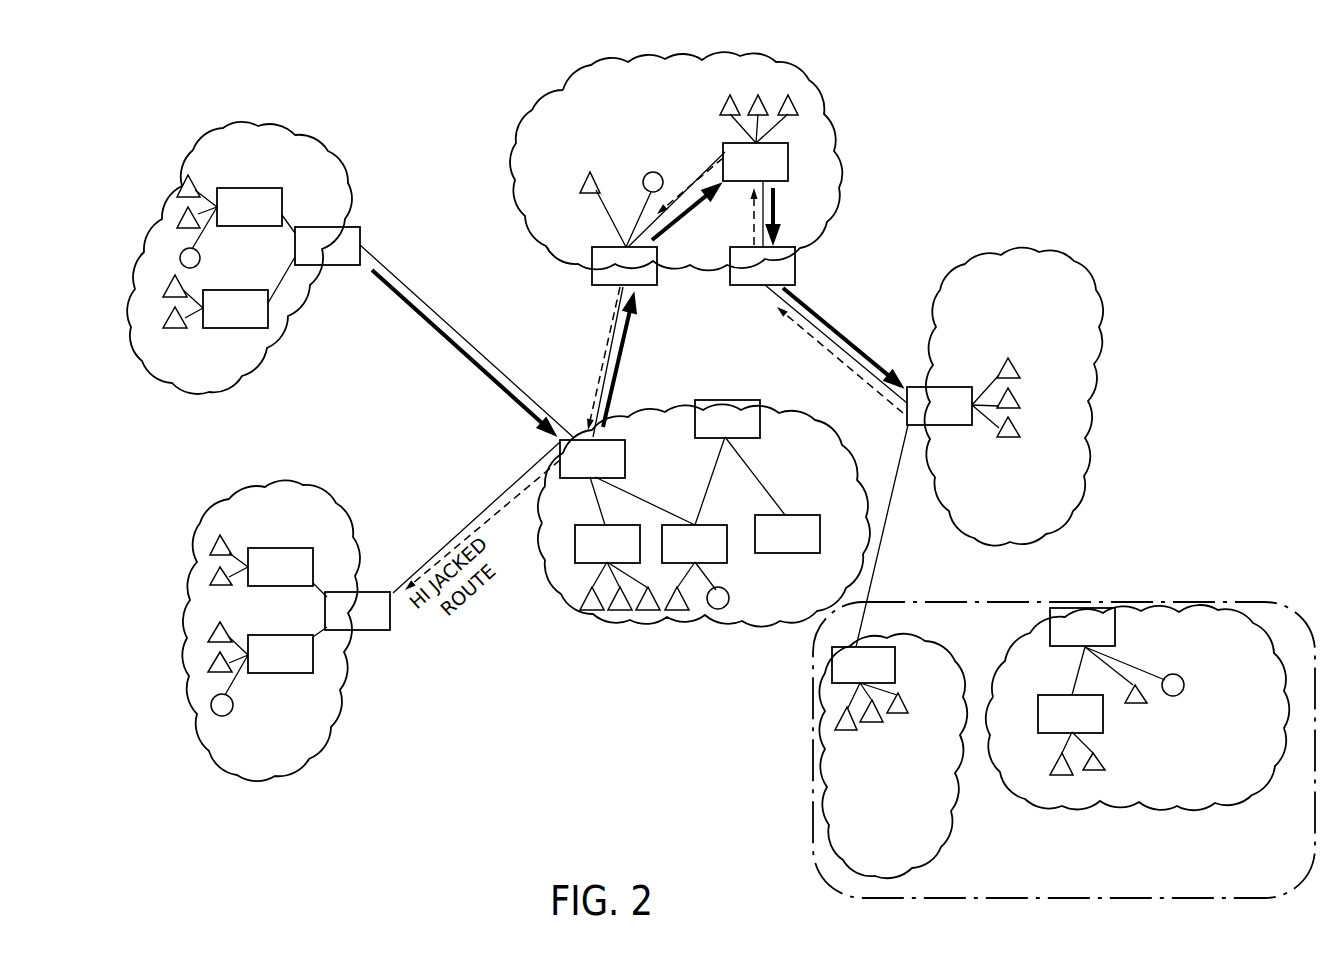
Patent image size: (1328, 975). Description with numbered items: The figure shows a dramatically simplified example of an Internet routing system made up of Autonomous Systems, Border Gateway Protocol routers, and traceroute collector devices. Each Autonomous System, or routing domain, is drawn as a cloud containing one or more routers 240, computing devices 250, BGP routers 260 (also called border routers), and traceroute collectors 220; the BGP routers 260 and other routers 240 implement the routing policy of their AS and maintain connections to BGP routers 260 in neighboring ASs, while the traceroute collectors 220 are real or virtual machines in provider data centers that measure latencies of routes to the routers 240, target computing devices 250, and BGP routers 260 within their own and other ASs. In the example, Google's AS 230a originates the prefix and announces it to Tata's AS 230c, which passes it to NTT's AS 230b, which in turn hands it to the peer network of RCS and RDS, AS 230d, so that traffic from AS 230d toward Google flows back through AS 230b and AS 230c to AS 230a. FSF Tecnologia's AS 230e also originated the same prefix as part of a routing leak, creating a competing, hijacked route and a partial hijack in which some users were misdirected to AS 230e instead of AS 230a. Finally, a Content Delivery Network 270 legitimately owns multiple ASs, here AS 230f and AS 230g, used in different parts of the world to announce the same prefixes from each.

The traceroute collector 220 is at (180, 252).
The router 240 is at (653, 438).
The computing device 250 is at (163, 320).
The BGP router 260 is at (705, 455).
The Content Delivery Network 270 is at (994, 632).
The Autonomous System 230a is at (150, 380).
The Autonomous System 230b is at (793, 67).
The Autonomous System 230c is at (570, 607).
The Autonomous System 230d is at (1090, 277).
The Autonomous System 230e is at (280, 780).
The Autonomous System 230f is at (837, 830).
The Autonomous System 230g is at (1252, 603).